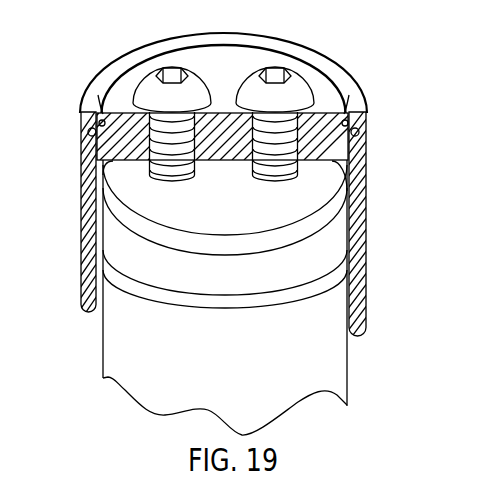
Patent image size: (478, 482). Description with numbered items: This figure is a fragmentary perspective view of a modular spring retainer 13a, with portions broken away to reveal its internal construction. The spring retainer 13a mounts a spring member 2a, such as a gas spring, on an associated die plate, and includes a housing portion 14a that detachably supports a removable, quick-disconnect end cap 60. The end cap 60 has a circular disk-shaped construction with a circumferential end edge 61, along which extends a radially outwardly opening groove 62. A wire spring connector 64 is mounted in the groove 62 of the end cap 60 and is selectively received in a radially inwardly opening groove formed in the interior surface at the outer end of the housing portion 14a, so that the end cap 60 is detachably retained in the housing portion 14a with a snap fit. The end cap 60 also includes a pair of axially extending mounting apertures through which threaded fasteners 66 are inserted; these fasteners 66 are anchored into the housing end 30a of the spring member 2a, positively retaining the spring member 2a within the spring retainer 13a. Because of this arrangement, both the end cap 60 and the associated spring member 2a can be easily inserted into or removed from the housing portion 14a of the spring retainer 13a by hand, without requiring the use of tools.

The spring member 2a is at (88, 347).
The spring retainer 13a is at (98, 75).
The housing portion 14a is at (369, 141).
The housing end 30a is at (307, 190).
The removable end cap 60 is at (238, 58).
The circumferential end edge 61 is at (354, 152).
The radially outwardly opening groove 62 is at (80, 143).
The wire spring connector 64 is at (362, 136).
The threaded fasteners 66 is at (152, 82).